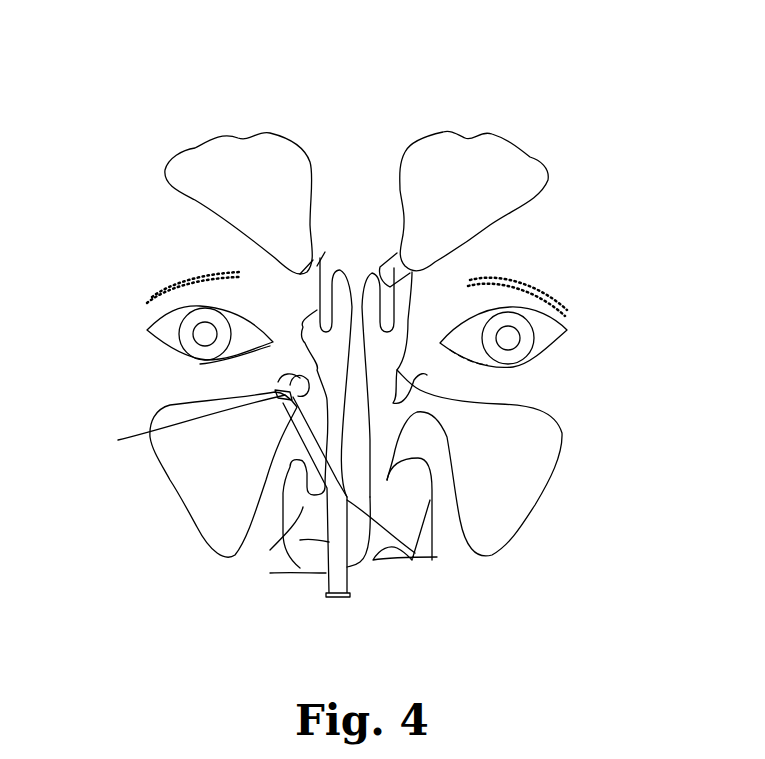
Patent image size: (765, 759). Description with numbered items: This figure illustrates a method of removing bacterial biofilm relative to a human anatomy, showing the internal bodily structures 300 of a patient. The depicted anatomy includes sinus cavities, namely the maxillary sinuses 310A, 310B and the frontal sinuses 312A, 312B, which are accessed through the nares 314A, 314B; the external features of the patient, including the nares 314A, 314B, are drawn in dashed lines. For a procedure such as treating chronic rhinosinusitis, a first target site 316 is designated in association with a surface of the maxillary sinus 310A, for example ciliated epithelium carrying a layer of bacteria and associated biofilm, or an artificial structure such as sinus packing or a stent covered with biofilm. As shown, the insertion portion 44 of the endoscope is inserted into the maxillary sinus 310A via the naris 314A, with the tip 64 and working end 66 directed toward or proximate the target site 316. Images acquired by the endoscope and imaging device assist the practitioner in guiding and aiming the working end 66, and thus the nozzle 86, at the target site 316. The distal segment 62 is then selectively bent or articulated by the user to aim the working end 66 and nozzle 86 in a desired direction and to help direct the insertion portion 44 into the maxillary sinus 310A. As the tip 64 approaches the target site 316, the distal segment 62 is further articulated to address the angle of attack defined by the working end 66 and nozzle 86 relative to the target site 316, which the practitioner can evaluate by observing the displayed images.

The internal bodily structures 300 is at (550, 72).
The frontal sinus 312A is at (190, 152).
The frontal sinus 312B is at (546, 158).
The maxillary sinus 310A is at (175, 489).
The maxillary sinus 310B is at (527, 498).
The tip 64 is at (320, 258).
The nozzle 86 is at (277, 390).
The target site 316 is at (275, 379).
The working end 66 is at (184, 423).
The distal segment 62 is at (347, 498).
The insertion portion 44 is at (321, 539).
The naris 314A is at (320, 574).
The naris 314B is at (399, 558).